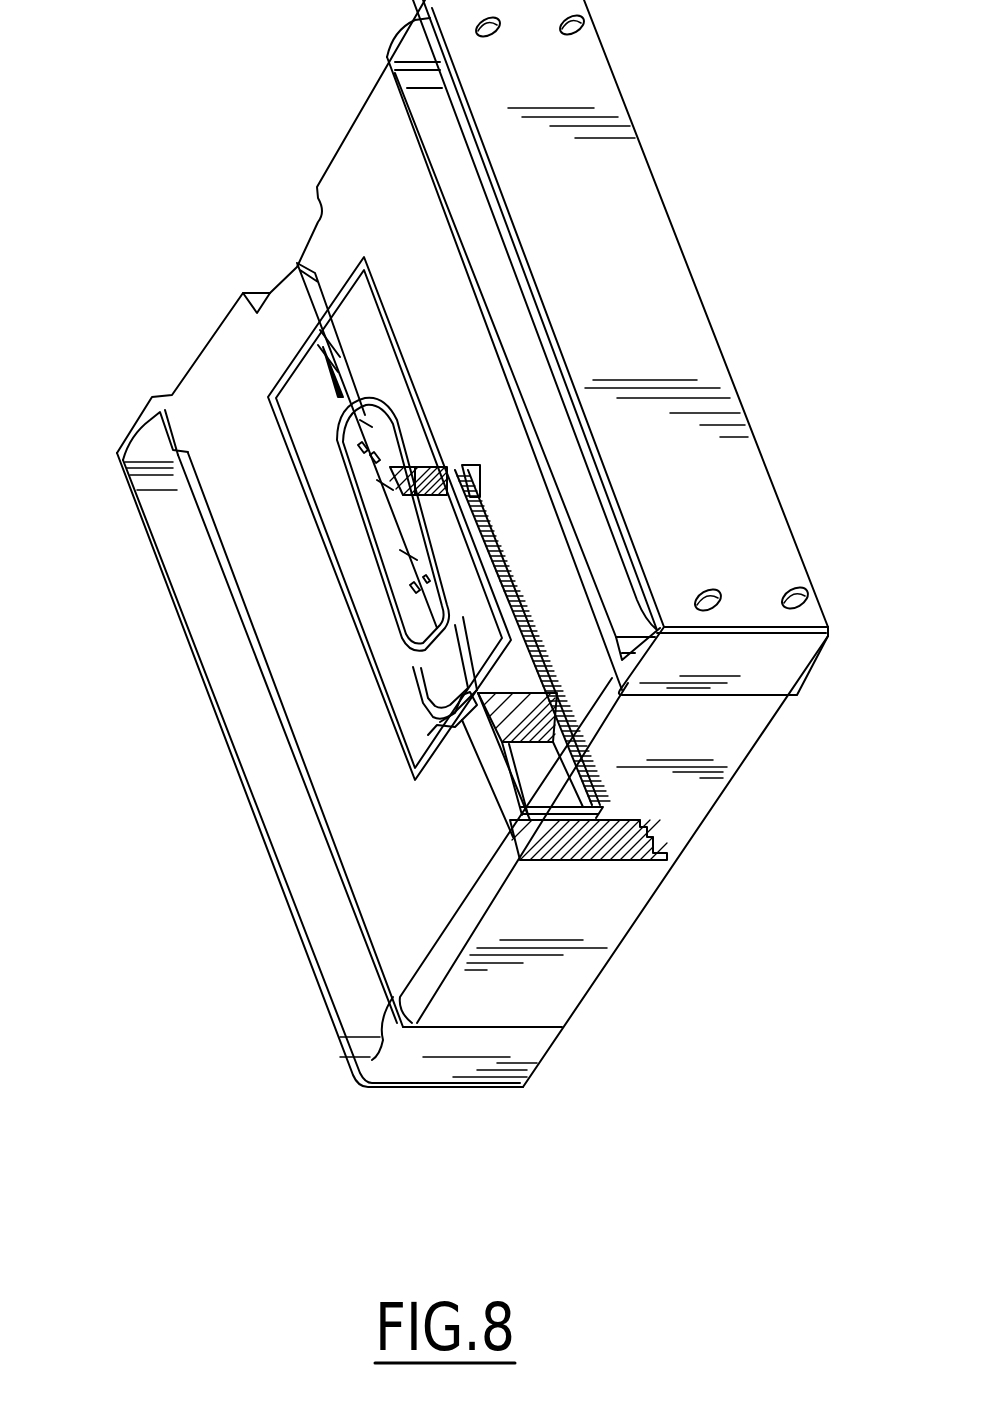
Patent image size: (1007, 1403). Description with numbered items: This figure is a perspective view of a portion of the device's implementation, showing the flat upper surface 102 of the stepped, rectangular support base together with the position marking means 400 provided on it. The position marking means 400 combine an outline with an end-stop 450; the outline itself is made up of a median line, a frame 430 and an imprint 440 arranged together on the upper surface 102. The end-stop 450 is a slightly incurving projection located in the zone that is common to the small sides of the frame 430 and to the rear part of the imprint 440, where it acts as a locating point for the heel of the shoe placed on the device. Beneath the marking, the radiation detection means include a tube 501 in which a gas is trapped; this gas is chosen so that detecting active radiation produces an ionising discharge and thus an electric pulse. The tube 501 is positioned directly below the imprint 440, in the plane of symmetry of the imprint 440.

The upper surface 102 is at (397, 877).
The position marking means 400 is at (380, 397).
The frame 430 is at (428, 421).
The imprint 440 is at (393, 580).
The end-stop 450 is at (463, 697).
The tube 501 is at (540, 697).